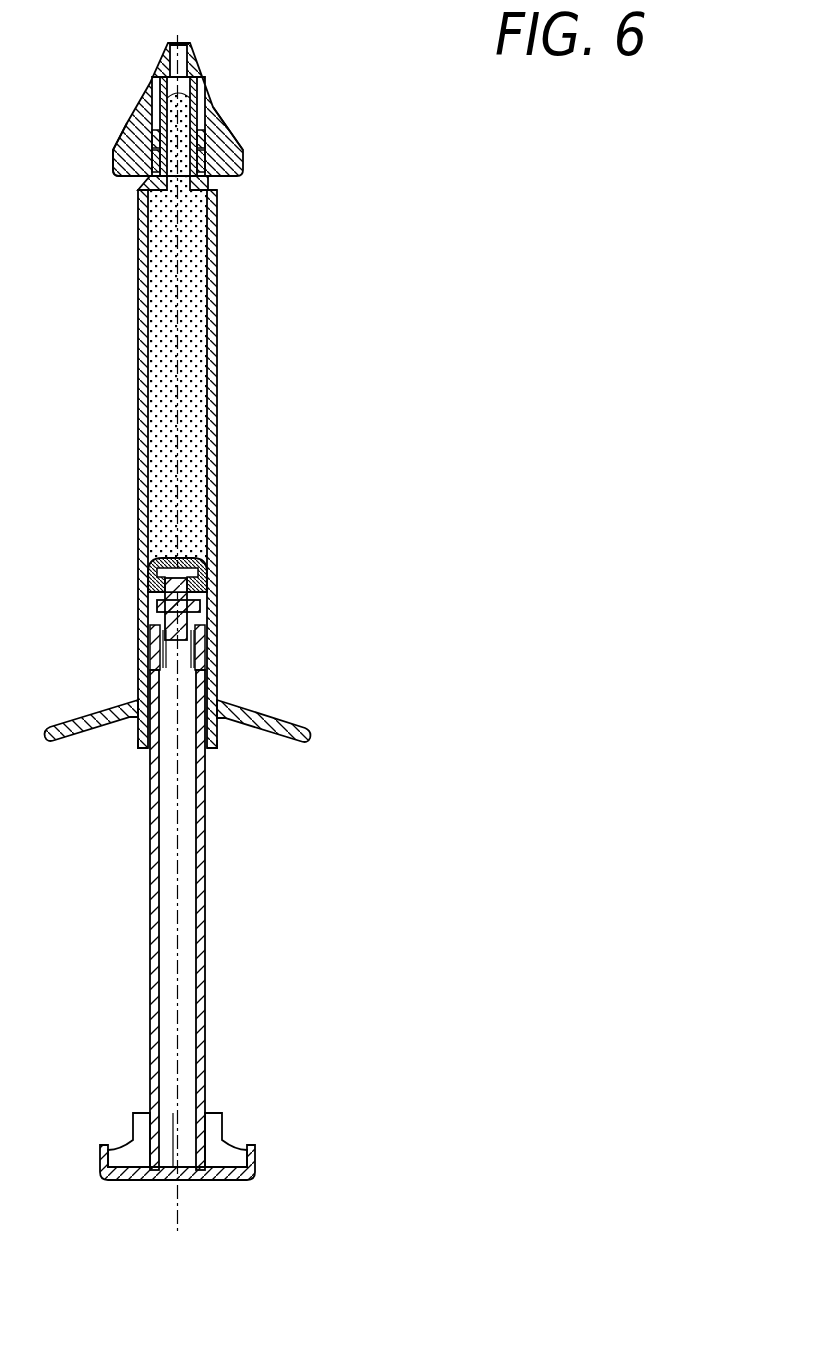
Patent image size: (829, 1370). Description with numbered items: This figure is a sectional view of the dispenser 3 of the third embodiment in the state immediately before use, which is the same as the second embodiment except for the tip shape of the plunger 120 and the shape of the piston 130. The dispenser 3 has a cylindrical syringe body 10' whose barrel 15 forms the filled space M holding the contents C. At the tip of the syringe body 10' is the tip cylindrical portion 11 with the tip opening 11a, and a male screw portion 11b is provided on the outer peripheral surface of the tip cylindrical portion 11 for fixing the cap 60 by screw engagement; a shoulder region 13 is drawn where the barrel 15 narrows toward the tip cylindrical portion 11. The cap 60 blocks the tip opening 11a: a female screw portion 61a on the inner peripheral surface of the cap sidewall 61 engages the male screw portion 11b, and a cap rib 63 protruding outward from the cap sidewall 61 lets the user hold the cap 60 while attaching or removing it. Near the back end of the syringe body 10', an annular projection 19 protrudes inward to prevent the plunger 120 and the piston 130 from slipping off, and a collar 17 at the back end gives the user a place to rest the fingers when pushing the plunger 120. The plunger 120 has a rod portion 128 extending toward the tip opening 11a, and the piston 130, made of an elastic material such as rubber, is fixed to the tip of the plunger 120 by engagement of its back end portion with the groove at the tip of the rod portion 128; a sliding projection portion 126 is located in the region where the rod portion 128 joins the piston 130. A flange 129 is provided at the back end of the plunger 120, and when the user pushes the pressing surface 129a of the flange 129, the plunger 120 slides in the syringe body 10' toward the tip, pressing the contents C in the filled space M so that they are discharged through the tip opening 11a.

The dispenser 3 is at (361, 66).
The syringe body 10' is at (180, 377).
The tip cylindrical portion 11 is at (198, 114).
The tip opening 11a is at (184, 74).
The male screw portion 11b is at (204, 160).
The barrel shoulder 13 is at (212, 192).
The barrel 15 is at (218, 383).
The collar 17 is at (256, 718).
The annular projection 19 is at (138, 680).
The cap 60 is at (212, 72).
The cap sidewall 61 is at (205, 135).
The female screw portion 61a is at (222, 117).
The cap rib 63 is at (113, 165).
The plunger 120 is at (222, 913).
The sliding projection portion 126 is at (210, 637).
The rod portion 128 is at (202, 849).
The flange 129 is at (250, 1168).
The pressing surface 129a is at (210, 1183).
The piston 130 is at (187, 558).
The filled space M is at (175, 415).
The contents C is at (196, 440).